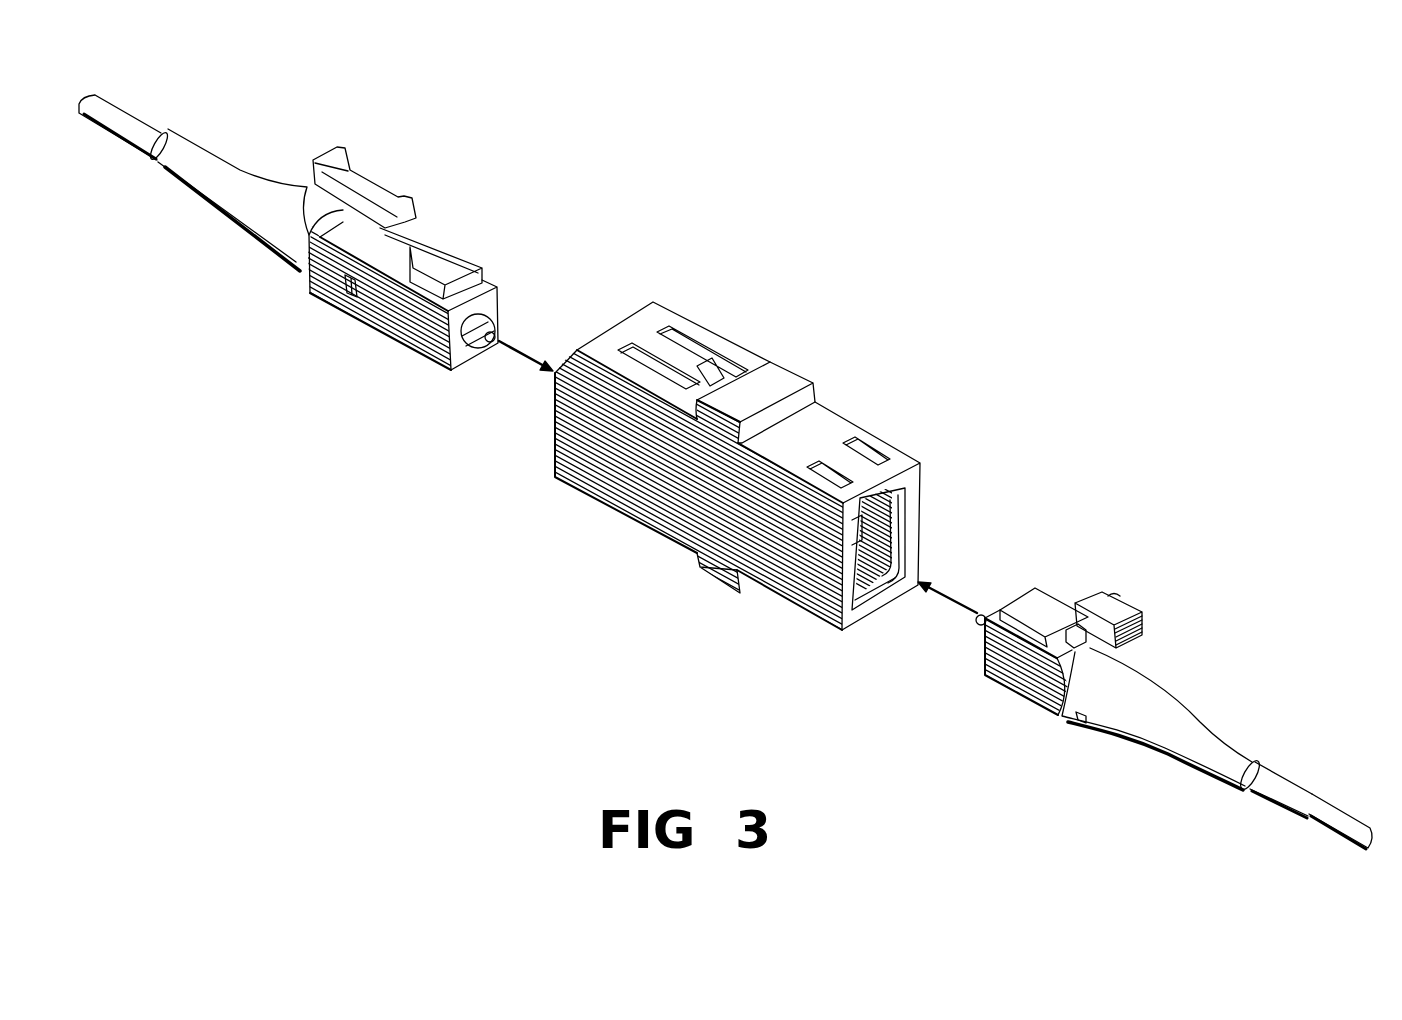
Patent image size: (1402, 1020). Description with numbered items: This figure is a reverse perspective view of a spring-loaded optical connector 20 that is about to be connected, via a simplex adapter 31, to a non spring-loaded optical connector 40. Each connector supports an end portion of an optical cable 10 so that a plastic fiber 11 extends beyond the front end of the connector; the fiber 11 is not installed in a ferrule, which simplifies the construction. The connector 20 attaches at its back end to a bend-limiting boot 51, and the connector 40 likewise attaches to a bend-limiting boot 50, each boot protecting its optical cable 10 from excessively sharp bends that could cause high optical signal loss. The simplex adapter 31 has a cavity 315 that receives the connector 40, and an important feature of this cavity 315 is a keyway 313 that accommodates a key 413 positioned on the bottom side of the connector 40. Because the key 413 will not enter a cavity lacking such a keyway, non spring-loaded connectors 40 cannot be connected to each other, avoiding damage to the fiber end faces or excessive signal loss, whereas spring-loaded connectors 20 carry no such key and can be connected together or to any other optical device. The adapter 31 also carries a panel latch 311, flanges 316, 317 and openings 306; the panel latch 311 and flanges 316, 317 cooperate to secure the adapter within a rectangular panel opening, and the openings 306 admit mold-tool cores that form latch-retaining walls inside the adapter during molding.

The optical cable 10 is at (134, 112).
The plastic fiber 11 is at (498, 338).
The spring-loaded optical connector 20 is at (497, 275).
The bend-limiting boot 51 is at (240, 172).
The simplex adapter 31 is at (771, 460).
The panel latch 311 is at (704, 364).
The flange 316 is at (785, 378).
The openings 306 is at (860, 444).
The cavity 315 is at (900, 538).
The keyway 313 is at (884, 594).
The flange 317 is at (716, 588).
The non spring-loaded optical connector 40 is at (1060, 587).
The bend-limiting boot 50 is at (1177, 702).
The key 413 is at (1082, 722).